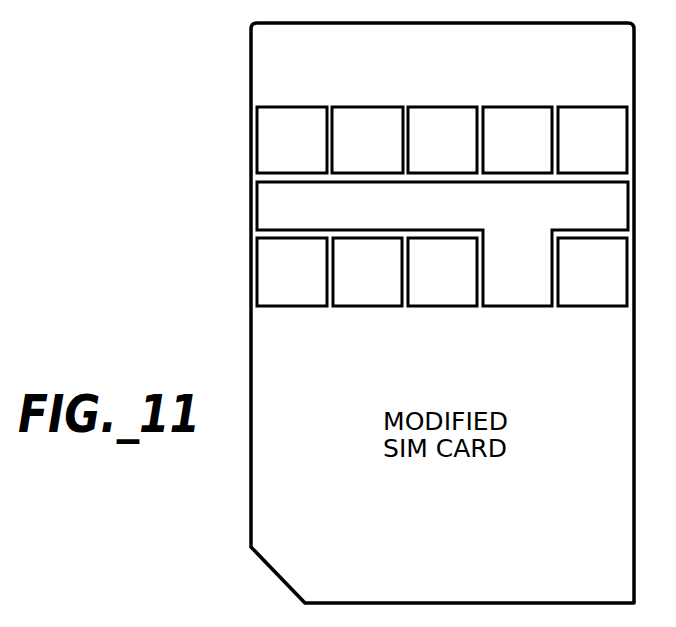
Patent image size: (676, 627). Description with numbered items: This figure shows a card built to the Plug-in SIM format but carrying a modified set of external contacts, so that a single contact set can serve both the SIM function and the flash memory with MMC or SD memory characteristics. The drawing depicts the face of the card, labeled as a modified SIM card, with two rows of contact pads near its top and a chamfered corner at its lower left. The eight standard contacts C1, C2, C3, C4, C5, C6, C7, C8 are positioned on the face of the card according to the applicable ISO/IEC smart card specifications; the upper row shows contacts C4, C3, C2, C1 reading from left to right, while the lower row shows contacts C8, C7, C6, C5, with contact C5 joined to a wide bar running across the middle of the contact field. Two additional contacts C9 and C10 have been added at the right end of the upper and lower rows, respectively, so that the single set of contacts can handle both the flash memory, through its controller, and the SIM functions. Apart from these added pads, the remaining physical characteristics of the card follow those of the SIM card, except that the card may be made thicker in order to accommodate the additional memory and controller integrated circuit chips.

The contact C1 is at (517, 140).
The contact C2 is at (442, 140).
The contact C3 is at (367, 140).
The contact C4 is at (292, 140).
The contact C5 is at (442, 244).
The contact C6 is at (442, 272).
The contact C7 is at (367, 272).
The contact C8 is at (292, 272).
The additional contact C9 is at (592, 140).
The additional contact C10 is at (592, 272).